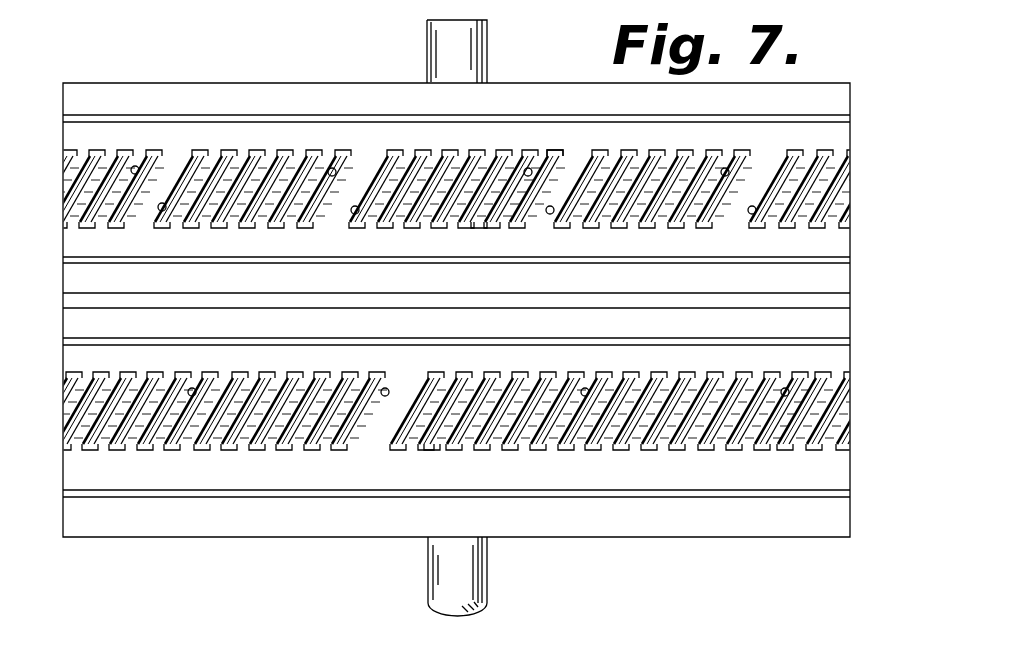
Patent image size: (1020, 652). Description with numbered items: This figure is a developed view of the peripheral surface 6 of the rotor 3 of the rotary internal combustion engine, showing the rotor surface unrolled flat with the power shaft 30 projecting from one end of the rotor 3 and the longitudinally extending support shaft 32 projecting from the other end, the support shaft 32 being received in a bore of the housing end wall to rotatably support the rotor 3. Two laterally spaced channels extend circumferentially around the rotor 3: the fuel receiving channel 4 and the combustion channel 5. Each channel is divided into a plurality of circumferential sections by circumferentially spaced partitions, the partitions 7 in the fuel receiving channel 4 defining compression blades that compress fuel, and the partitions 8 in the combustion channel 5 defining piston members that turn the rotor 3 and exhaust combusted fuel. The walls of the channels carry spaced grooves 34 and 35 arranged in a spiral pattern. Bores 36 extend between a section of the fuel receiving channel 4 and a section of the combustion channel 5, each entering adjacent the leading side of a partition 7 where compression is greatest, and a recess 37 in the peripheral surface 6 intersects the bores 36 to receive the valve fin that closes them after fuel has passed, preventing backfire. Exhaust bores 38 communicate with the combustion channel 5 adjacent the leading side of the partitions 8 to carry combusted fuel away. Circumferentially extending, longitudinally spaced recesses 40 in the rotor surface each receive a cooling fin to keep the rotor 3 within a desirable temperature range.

The rotor 3 is at (162, 99).
The fuel receiving channel 4 is at (479, 405).
The combustion channel 5 is at (588, 187).
The peripheral surface 6 is at (568, 105).
The partitions 7 is at (609, 416).
The partitions 8 is at (358, 190).
The power shaft 30 is at (490, 570).
The support shaft 32 is at (428, 31).
The grooves 34 is at (428, 448).
The grooves 35 is at (478, 227).
The bores 36 is at (153, 209).
The recess 37 is at (273, 300).
The exhaust bores 38 is at (545, 155).
The recesses 40 is at (278, 119).